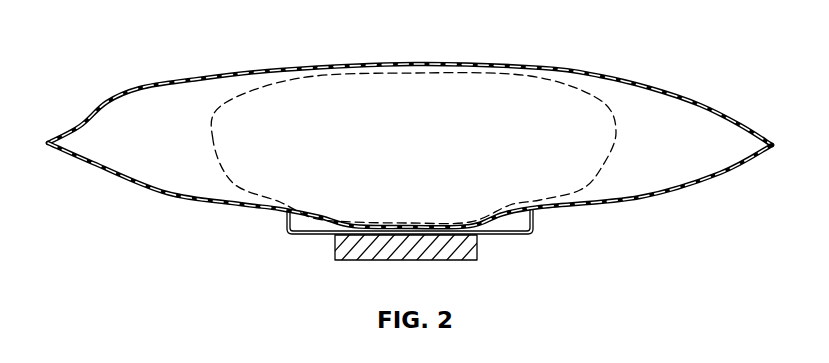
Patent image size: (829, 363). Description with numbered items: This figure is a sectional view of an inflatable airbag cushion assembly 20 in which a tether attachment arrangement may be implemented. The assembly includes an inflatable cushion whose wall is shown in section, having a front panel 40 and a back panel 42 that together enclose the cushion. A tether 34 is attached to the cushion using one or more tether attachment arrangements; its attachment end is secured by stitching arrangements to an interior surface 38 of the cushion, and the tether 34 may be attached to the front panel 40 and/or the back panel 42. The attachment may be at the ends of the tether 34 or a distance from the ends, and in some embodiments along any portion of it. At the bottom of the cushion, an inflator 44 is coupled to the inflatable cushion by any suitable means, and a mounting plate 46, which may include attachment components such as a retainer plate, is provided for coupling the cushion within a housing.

The inflatable airbag cushion assembly 20 is at (152, 47).
The tether 34 is at (543, 82).
The interior surface 38 is at (194, 94).
The front panel 40 is at (428, 62).
The back panel 42 is at (257, 212).
The inflator 44 is at (353, 251).
The mounting plate 46 is at (507, 236).